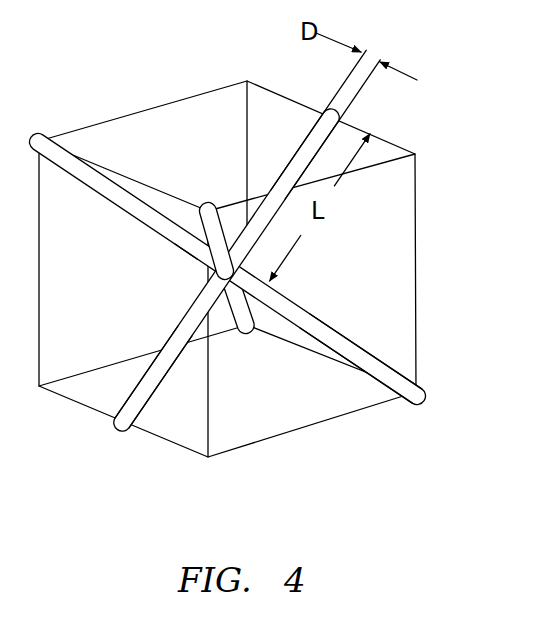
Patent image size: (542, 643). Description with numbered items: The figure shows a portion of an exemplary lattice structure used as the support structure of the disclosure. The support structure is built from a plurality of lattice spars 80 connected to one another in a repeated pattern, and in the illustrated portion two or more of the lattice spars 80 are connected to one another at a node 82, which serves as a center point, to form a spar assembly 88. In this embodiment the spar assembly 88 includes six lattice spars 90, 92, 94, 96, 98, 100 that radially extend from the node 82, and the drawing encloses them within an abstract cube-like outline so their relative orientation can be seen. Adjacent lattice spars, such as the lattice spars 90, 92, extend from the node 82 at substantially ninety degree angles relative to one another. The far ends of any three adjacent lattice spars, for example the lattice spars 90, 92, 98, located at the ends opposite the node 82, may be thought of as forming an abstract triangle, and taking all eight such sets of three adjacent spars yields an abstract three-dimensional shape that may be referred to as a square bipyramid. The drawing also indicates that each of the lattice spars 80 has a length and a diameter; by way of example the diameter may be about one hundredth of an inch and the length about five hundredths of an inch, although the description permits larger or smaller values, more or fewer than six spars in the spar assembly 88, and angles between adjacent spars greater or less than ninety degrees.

The lattice spars 80 is at (296, 129).
The node 82 is at (197, 275).
The spar assembly 88 is at (421, 229).
The lattice spar 90 is at (393, 383).
The lattice spar 92 is at (215, 228).
The lattice spar 94 is at (248, 323).
The lattice spar 96 is at (118, 196).
The lattice spar 98 is at (343, 130).
The lattice spar 100 is at (147, 388).